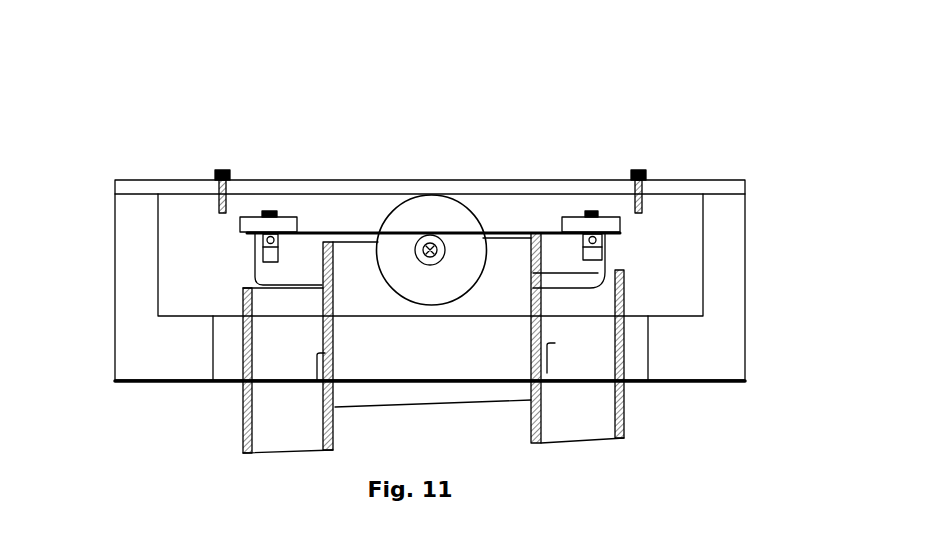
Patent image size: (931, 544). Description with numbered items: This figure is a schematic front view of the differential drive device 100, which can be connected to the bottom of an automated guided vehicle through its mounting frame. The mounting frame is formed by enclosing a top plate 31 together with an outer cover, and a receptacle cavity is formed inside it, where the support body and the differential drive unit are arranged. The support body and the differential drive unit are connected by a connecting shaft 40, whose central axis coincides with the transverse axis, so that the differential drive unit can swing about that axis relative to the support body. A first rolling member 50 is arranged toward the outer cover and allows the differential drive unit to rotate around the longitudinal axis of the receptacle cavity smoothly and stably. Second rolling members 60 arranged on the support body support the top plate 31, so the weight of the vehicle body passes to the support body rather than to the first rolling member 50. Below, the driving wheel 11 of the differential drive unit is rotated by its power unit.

The differential drive device 100 is at (151, 142).
The top plate 31 is at (587, 190).
The first rolling member 50 is at (240, 221).
The second rolling member 60 is at (452, 215).
The connecting shaft 40 is at (429, 245).
The driving wheel 11 is at (595, 415).